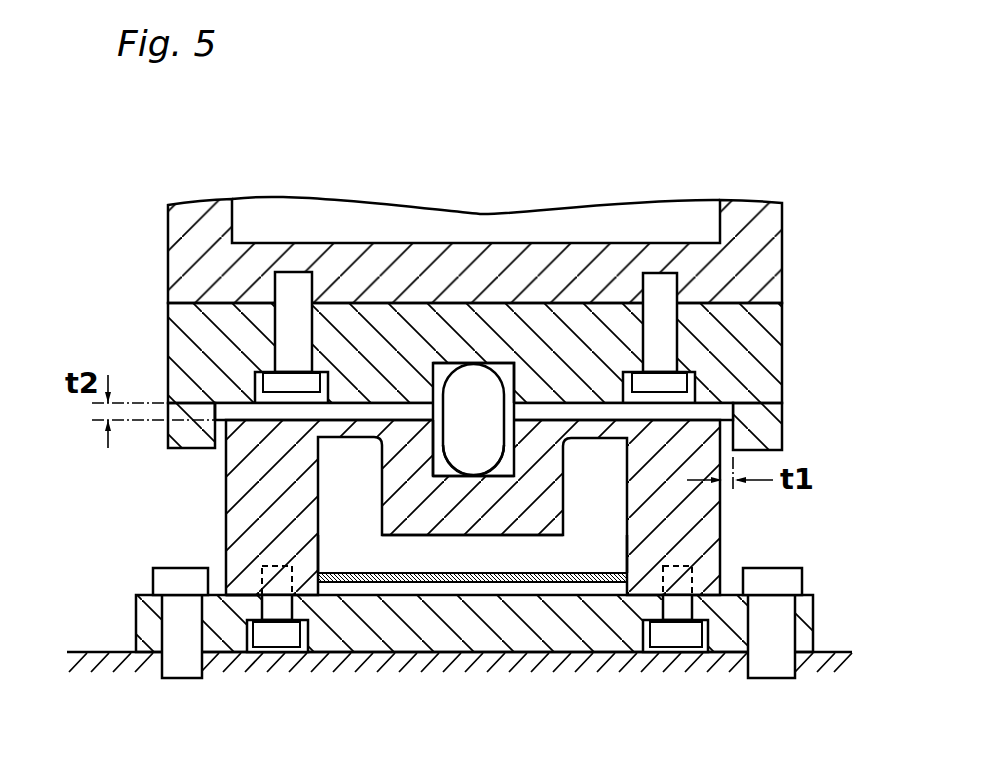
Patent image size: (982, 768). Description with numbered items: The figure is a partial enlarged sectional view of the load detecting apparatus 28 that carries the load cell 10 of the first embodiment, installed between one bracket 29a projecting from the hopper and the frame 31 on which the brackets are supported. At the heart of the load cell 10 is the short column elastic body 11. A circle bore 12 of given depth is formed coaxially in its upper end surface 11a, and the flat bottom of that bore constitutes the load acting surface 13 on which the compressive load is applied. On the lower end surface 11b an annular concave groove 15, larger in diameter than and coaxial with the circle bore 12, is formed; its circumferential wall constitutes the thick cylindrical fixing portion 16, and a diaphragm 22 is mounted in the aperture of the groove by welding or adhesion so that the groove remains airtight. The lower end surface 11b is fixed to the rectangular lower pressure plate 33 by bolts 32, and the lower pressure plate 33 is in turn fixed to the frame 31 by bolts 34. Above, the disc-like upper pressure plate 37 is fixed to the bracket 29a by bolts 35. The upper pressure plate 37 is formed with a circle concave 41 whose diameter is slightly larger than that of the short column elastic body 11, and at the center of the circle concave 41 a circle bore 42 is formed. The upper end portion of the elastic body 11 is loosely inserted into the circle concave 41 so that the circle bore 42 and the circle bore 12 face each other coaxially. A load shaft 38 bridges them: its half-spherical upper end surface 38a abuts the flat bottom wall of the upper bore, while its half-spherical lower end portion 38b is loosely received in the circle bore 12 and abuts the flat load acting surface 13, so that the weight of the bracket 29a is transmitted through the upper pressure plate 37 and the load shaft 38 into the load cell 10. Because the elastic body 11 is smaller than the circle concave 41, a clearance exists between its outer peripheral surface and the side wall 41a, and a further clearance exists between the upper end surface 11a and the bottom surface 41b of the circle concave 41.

The load cell 10 is at (733, 522).
The short column elastic body 11 is at (222, 478).
The upper end surface 11a is at (228, 419).
The lower end surface 11b is at (250, 603).
The circle bore 12 is at (430, 438).
The load acting surface 13 is at (445, 470).
The annular concave groove 15 is at (604, 537).
The fixing portion 16 is at (709, 558).
The diaphragm 22 is at (410, 577).
The load detecting apparatus 28 is at (466, 324).
The bracket 29a is at (168, 208).
The frame 31 is at (110, 658).
The bolts 32 is at (275, 637).
The lower pressure plate 33 is at (160, 628).
The bolts 34 is at (475, 640).
The bolts 35 is at (283, 290).
The upper pressure plate 37 is at (765, 343).
The load shaft 38 is at (516, 393).
The upper end surface 38a is at (496, 390).
The lower end portion 38b is at (503, 478).
The circle concave 41 is at (477, 384).
The side wall 41a is at (782, 433).
The bottom surface 41b is at (245, 405).
The circle bore 42 is at (432, 378).